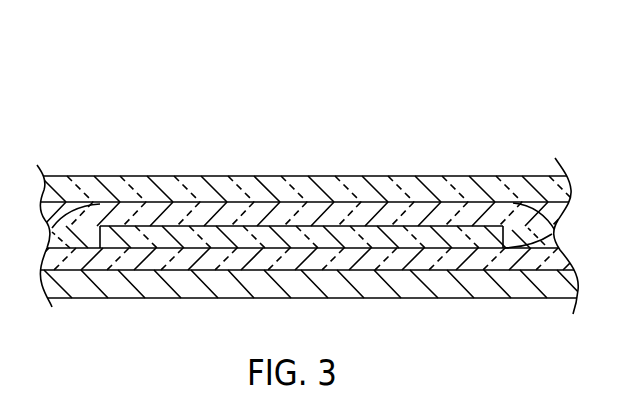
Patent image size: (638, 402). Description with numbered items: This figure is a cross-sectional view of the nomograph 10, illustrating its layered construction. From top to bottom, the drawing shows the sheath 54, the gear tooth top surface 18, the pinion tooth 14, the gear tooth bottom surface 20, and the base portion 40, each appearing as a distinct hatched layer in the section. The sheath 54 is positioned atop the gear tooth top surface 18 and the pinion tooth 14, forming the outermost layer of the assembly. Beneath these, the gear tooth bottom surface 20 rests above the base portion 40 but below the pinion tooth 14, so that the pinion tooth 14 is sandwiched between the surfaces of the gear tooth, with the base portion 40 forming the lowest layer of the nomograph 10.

The nomograph 10 is at (111, 75).
The pinion tooth 14 is at (345, 234).
The gear tooth top surface 18 is at (236, 204).
The gear tooth bottom surface 20 is at (547, 251).
The base portion 40 is at (554, 289).
The sheath 54 is at (495, 183).